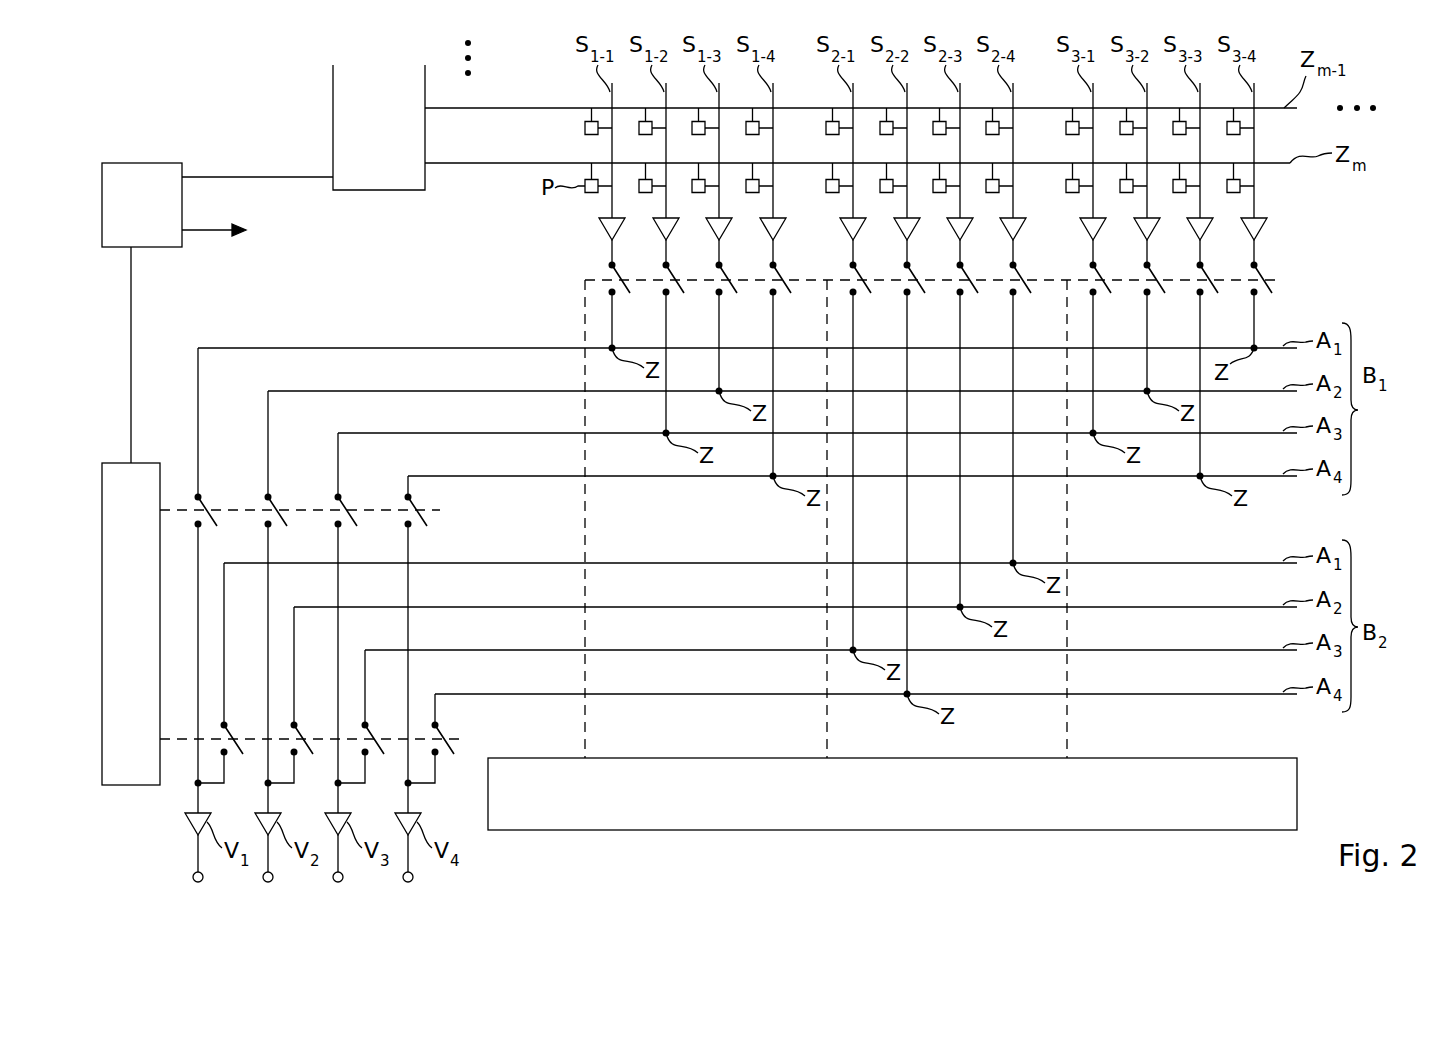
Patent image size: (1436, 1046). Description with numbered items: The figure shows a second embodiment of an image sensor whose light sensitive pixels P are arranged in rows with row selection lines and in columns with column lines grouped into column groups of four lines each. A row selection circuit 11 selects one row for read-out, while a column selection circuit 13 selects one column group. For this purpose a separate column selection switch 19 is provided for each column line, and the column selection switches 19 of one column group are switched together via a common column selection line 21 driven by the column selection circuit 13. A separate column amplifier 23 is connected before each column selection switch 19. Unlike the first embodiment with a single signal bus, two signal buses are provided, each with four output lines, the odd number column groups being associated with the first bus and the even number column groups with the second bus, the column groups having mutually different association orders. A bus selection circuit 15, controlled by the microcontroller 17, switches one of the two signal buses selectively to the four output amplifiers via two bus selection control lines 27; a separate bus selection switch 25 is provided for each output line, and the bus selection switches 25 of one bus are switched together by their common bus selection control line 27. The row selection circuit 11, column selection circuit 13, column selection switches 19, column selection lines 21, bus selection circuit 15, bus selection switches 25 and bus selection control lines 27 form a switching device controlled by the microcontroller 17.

The row selection circuit 11 is at (333, 102).
The column selection circuit 13 is at (1015, 853).
The bus selection circuit 15 is at (126, 787).
The microcontroller 17 is at (143, 173).
The column selection switch 19 is at (588, 268).
The column selection line 21 is at (586, 718).
The column amplifier 23 is at (1262, 222).
The bus selection switch 25 is at (396, 494).
The bus selection control line 27 is at (176, 505).